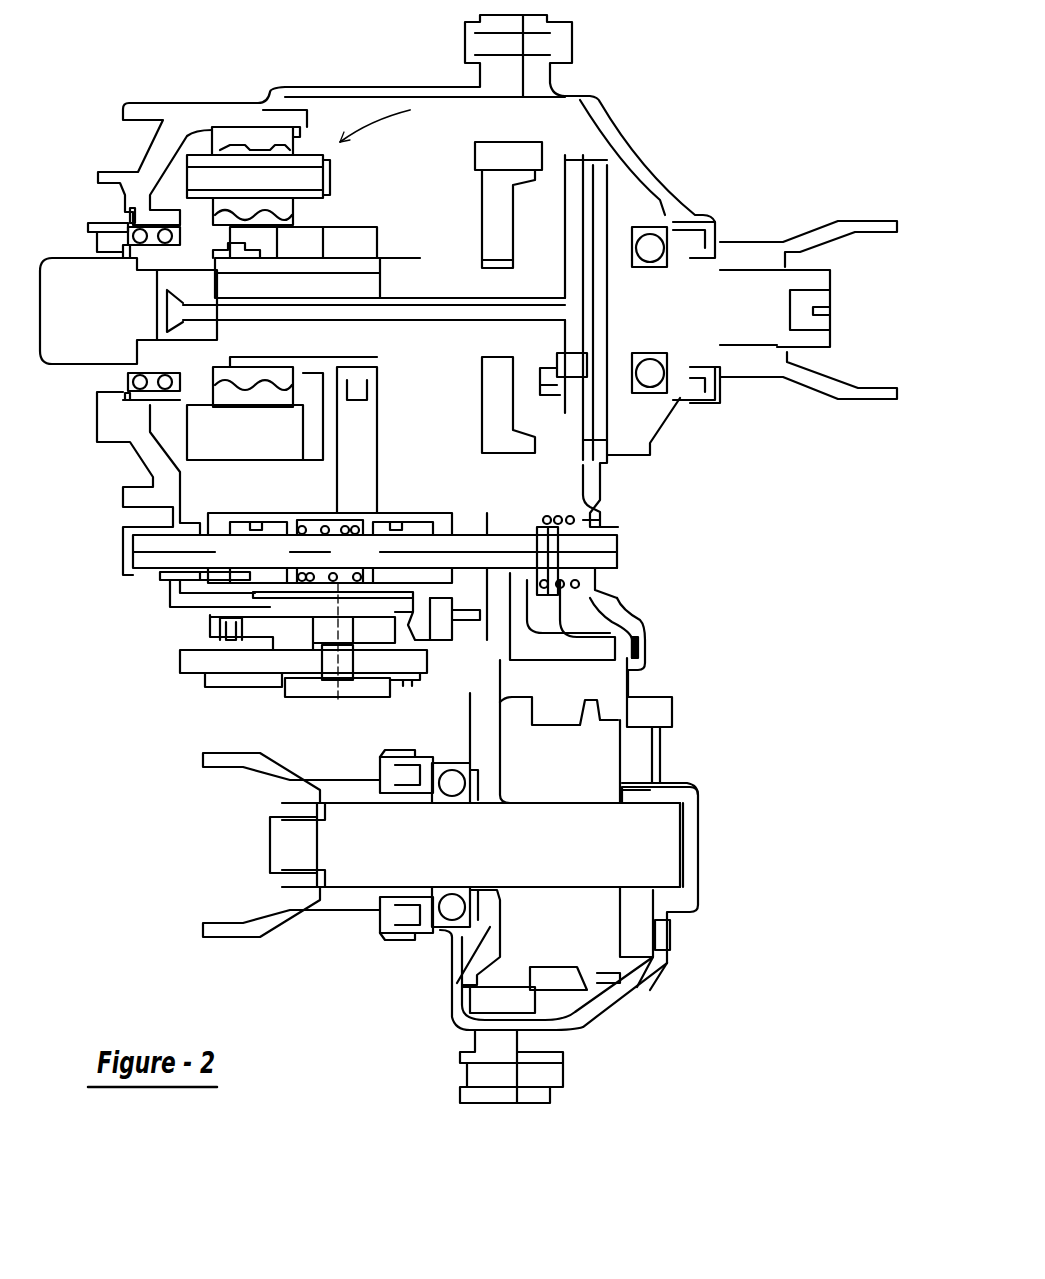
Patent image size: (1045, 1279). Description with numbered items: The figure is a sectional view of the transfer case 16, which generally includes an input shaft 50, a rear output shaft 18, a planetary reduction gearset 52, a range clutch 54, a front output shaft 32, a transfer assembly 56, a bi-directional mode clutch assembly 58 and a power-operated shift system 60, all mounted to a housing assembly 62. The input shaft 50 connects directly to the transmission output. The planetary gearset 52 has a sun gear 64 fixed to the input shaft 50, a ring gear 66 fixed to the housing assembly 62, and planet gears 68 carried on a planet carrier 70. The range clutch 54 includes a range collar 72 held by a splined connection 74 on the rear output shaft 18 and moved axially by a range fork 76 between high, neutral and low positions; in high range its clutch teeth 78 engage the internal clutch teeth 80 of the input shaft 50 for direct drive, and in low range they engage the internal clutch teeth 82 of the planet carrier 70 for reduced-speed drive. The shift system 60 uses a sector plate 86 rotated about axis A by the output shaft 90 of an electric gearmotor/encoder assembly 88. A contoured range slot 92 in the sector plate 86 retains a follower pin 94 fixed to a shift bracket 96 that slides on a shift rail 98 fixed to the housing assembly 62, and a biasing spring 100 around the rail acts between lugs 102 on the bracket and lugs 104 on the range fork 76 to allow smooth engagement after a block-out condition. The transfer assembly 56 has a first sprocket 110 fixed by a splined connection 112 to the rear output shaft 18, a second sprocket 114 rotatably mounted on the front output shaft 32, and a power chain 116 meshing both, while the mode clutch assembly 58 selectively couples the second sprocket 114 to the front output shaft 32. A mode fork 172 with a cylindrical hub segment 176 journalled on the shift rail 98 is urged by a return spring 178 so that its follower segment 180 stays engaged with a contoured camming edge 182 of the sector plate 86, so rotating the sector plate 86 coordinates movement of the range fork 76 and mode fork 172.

The transfer case 16 is at (678, 140).
The rear output shaft 18 is at (745, 290).
The front output shaft 32 is at (668, 842).
The input shaft 50 is at (88, 278).
The planetary reduction gearset 52 is at (375, 119).
The range clutch 54 is at (388, 455).
The transfer assembly 56 is at (468, 452).
The bi-directional mode clutch assembly 58 is at (628, 755).
The power-operated shift system 60 is at (195, 682).
The housing assembly 62 is at (668, 940).
The sun gear 64 is at (250, 392).
The ring gear 66 is at (240, 137).
The planet gears 68 is at (293, 205).
The planet carrier 70 is at (248, 455).
The range collar 72 is at (276, 255).
The splined connection 74 is at (308, 345).
The range fork 76 is at (343, 490).
The clutch teeth 78 is at (266, 252).
The internal clutch teeth 80 is at (266, 370).
The internal clutch teeth 82 is at (315, 245).
The sector plate 86 is at (280, 607).
The electric gearmotor/encoder assembly 88 is at (335, 682).
The output shaft 90 is at (398, 665).
The range slot 92 is at (410, 612).
The follower pin 94 is at (423, 622).
The shift bracket 96 is at (255, 585).
The shift rail 98 is at (608, 548).
The biasing spring 100 is at (302, 525).
The lugs 102 is at (290, 575).
The lugs 104 is at (288, 540).
The first sprocket 110 is at (485, 218).
The splined connection 112 is at (493, 262).
The second sprocket 114 is at (510, 707).
The power chain 116 is at (478, 1000).
The mode fork 172 is at (608, 625).
The cylindrical hub segment 176 is at (531, 530).
The return spring 178 is at (578, 520).
The follower segment 180 is at (500, 625).
The camming edge 182 is at (492, 570).